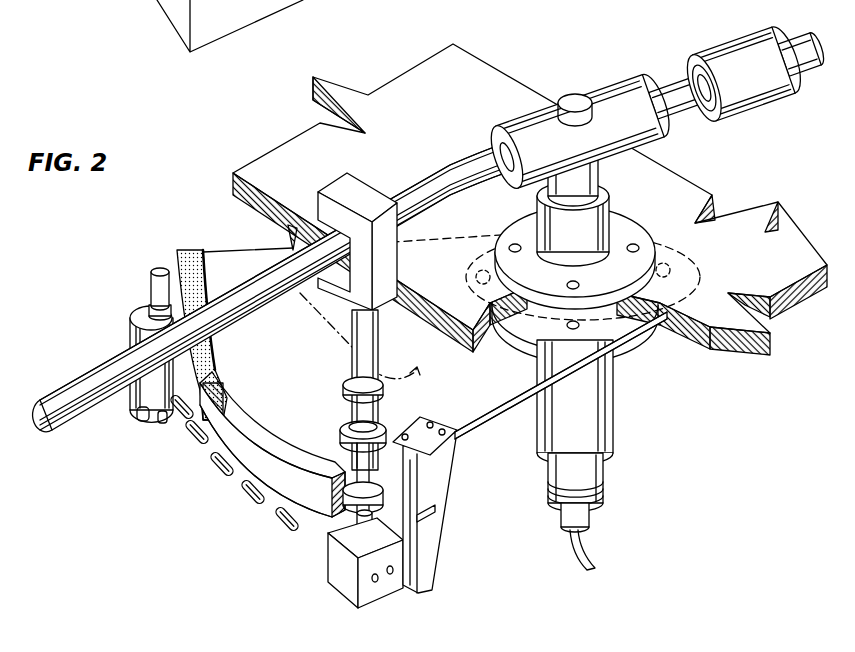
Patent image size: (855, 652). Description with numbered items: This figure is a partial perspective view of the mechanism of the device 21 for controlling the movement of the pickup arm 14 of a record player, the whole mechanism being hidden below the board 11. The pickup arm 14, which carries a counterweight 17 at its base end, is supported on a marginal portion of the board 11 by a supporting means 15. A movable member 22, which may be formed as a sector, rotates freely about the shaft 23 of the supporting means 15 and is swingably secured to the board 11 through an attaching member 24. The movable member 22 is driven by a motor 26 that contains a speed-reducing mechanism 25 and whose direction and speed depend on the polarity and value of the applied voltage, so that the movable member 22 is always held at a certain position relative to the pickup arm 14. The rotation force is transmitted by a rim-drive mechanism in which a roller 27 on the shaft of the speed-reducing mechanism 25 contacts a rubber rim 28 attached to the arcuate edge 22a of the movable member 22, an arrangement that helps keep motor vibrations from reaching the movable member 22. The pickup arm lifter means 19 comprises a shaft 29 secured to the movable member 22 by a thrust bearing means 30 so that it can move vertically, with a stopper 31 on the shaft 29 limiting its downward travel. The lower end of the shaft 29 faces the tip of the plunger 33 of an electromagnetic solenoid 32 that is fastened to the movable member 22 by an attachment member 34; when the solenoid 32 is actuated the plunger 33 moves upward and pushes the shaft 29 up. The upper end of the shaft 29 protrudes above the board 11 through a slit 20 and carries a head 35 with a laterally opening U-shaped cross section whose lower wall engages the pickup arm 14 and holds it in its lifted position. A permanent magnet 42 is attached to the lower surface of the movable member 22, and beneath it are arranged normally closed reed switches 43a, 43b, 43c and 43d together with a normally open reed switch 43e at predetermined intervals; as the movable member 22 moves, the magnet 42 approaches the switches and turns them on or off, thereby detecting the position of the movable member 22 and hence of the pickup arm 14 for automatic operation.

The board 11 is at (517, 86).
The pickup arm 14 is at (72, 386).
The supporting means 15 is at (632, 205).
The counterweight 17 is at (735, 45).
The pickup arm lifter means 19 is at (378, 312).
The slit 20 is at (422, 368).
The device for controlling the movement of the pickup arm 21 is at (478, 47).
The movable member 22 is at (485, 412).
The arcuate edge 22a is at (292, 478).
The shaft 23 is at (612, 425).
The attaching member 24 is at (643, 357).
The speed-reducing mechanism 25 is at (137, 317).
The motor 26 is at (137, 410).
The roller 27 is at (152, 280).
The rubber rim 28 is at (188, 250).
The shaft 29 is at (377, 325).
The thrust bearing means 30 is at (385, 425).
The stopper 31 is at (345, 384).
The electromagnetic solenoid 32 is at (343, 590).
The plunger 33 is at (355, 524).
The attachment member 34 is at (434, 540).
The head 35 is at (362, 165).
The permanent magnet 42 is at (272, 444).
The reed switch 43a is at (284, 517).
The reed switch 43b is at (252, 496).
The reed switch 43c is at (221, 468).
The reed switch 43d is at (195, 438).
The reed switch 43e is at (180, 414).